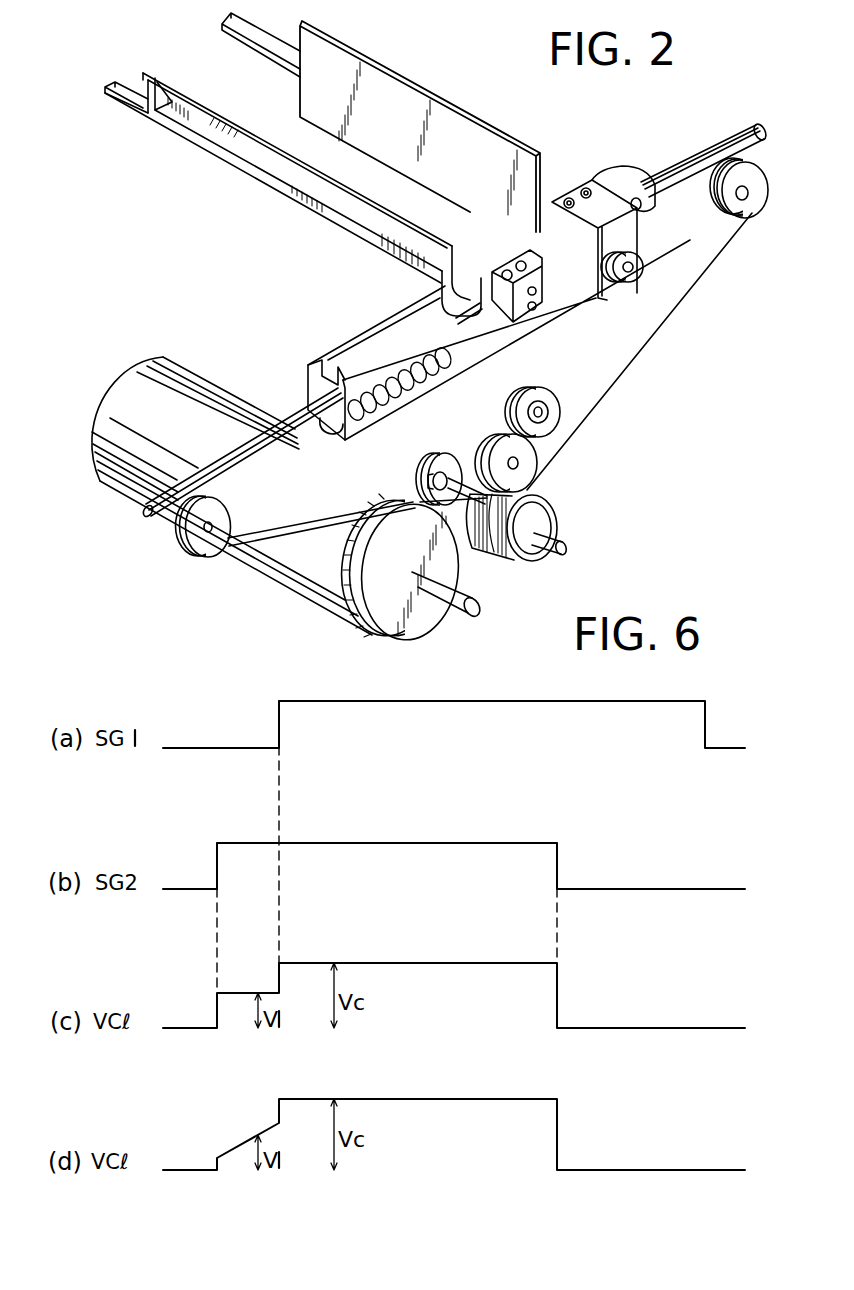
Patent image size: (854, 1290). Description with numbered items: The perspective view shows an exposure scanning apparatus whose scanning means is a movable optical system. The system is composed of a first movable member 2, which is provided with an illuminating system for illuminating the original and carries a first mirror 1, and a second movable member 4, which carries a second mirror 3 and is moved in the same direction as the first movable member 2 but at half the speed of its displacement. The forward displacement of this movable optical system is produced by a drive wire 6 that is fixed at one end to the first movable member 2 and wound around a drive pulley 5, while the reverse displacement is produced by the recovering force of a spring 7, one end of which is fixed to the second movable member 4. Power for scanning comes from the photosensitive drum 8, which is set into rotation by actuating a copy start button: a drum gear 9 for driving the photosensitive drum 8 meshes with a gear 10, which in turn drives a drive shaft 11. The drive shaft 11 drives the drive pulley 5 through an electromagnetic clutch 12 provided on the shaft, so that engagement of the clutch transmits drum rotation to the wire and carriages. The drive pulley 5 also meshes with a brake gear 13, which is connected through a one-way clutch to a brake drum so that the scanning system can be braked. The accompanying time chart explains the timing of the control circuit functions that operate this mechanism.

The first mirror 1 is at (170, 80).
The first movable member 2 is at (132, 88).
The second mirror 3 is at (482, 145).
The second movable member 4 is at (606, 182).
The drive pulley 5 is at (505, 440).
The drive wire 6 is at (288, 535).
The spring 7 is at (435, 378).
The photosensitive drum 8 is at (300, 575).
The drum gear 9 is at (422, 605).
The gear 10 is at (437, 457).
The drive shaft 11 is at (467, 525).
The electromagnetic clutch 12 is at (518, 493).
The brake gear 13 is at (548, 405).